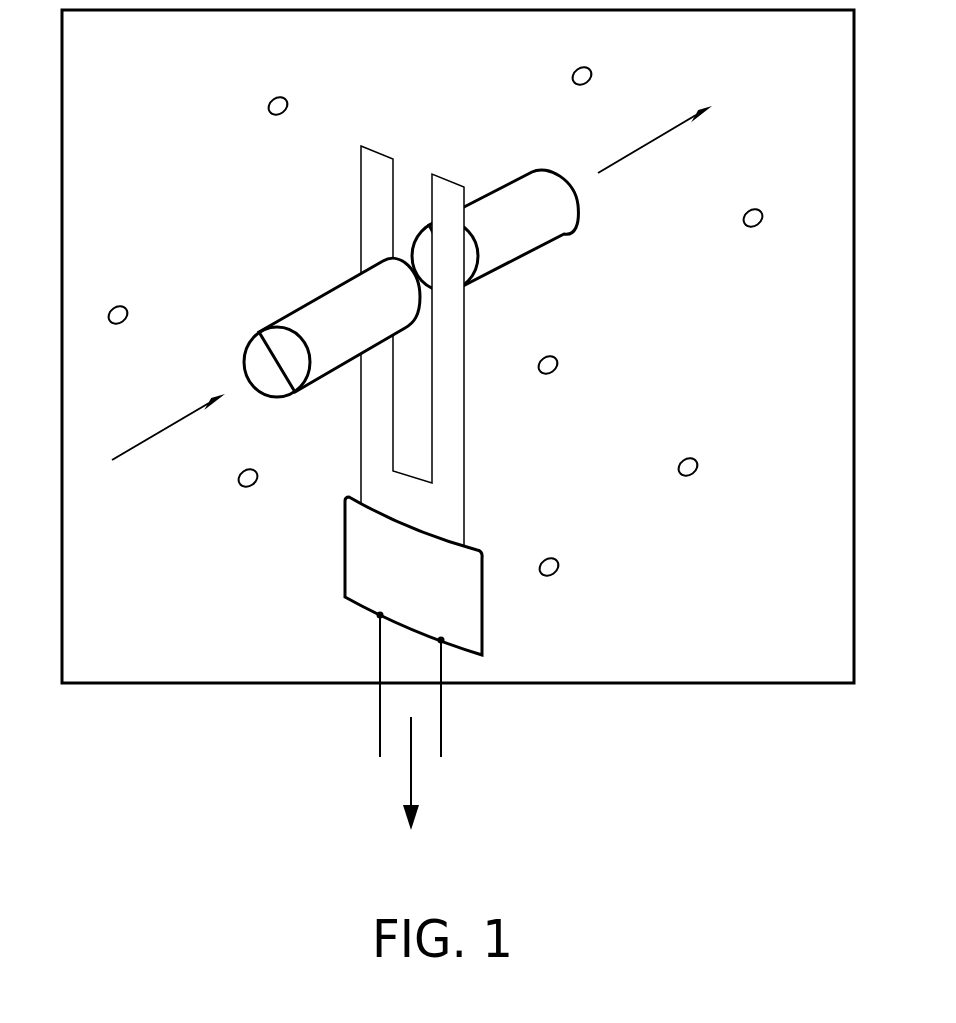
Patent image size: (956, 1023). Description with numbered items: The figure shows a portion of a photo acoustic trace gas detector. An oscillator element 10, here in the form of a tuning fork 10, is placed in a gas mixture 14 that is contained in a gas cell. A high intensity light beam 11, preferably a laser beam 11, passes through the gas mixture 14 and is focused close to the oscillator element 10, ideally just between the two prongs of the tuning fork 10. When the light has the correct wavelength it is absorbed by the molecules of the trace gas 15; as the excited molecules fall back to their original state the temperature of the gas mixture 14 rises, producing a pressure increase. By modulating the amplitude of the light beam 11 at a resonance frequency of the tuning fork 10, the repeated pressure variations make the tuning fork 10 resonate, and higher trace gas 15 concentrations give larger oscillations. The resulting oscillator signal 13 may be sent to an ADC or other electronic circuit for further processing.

The oscillator element 10 is at (445, 178).
The light beam 11 is at (143, 443).
The oscillator signal 13 is at (412, 780).
The gas mixture 14 is at (170, 685).
The trace gas 15 is at (279, 97).